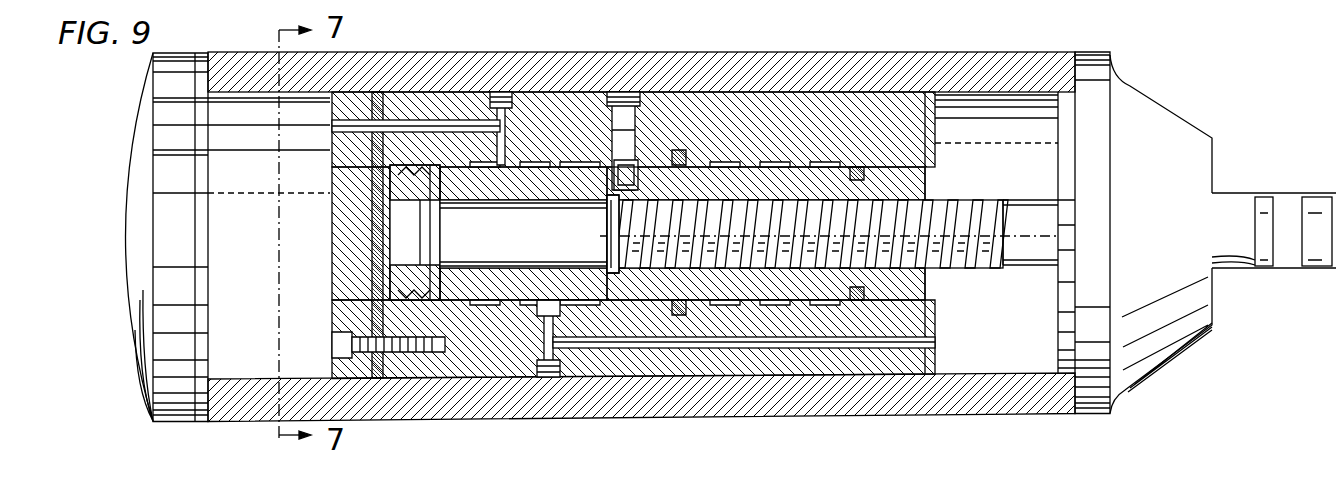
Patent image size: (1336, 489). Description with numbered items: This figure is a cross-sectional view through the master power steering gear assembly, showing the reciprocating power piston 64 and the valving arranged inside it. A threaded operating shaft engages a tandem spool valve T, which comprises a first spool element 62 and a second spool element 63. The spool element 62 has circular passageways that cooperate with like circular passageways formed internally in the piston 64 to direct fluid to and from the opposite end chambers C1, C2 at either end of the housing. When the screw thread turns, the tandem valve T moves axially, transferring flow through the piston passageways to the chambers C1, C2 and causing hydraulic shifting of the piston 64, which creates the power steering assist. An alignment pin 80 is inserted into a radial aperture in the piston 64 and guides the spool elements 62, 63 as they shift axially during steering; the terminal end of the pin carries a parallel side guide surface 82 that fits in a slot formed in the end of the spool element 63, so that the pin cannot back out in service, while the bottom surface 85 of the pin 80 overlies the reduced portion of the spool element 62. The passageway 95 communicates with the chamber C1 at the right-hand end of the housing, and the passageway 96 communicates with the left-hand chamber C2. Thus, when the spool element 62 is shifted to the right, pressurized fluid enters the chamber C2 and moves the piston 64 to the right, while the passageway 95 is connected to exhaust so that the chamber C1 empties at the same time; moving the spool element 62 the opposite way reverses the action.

The first spool element 62 is at (468, 185).
The second spool element 63 is at (777, 185).
The reciprocating power piston 64 is at (908, 95).
The alignment pin 80 is at (608, 132).
The side guide surface 82 is at (628, 170).
The bottom surface 85 is at (612, 212).
The passageway 95 is at (712, 345).
The passageway 96 is at (396, 122).
The tandem spool valve T is at (483, 362).
The end chamber C1 is at (1016, 346).
The end chamber C2 is at (266, 232).